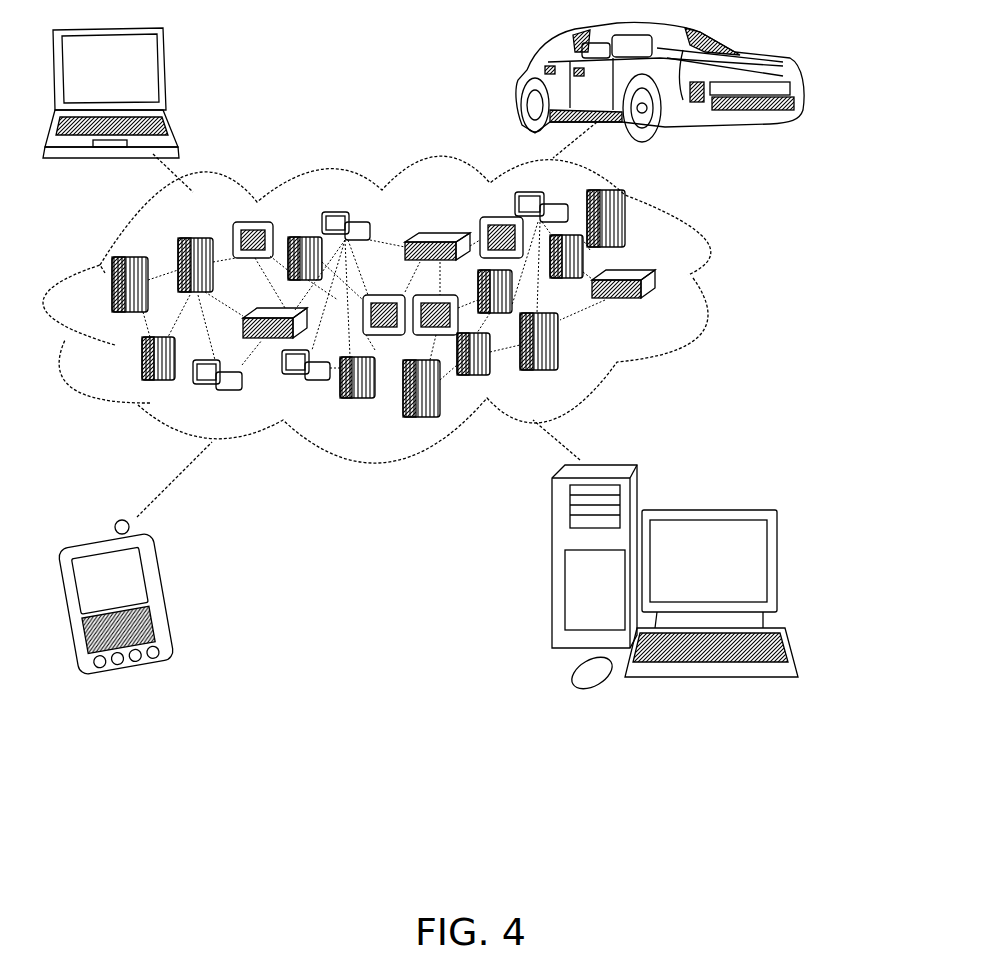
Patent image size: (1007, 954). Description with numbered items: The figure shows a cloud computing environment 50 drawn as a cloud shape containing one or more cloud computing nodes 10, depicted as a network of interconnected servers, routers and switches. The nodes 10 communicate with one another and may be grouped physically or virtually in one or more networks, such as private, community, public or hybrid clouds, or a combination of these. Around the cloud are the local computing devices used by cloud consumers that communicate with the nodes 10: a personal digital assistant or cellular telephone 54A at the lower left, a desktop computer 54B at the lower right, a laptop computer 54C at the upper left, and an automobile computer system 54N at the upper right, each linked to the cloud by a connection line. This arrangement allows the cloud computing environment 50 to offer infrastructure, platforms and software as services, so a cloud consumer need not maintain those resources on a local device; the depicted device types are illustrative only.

The cloud computing nodes 10 is at (397, 309).
The cloud computing environment 50 is at (697, 285).
The personal digital assistant (PDA) or cellular telephone 54A is at (167, 590).
The desktop computer 54B is at (705, 507).
The laptop computer 54C is at (167, 75).
The automobile computer system 54N is at (522, 83).